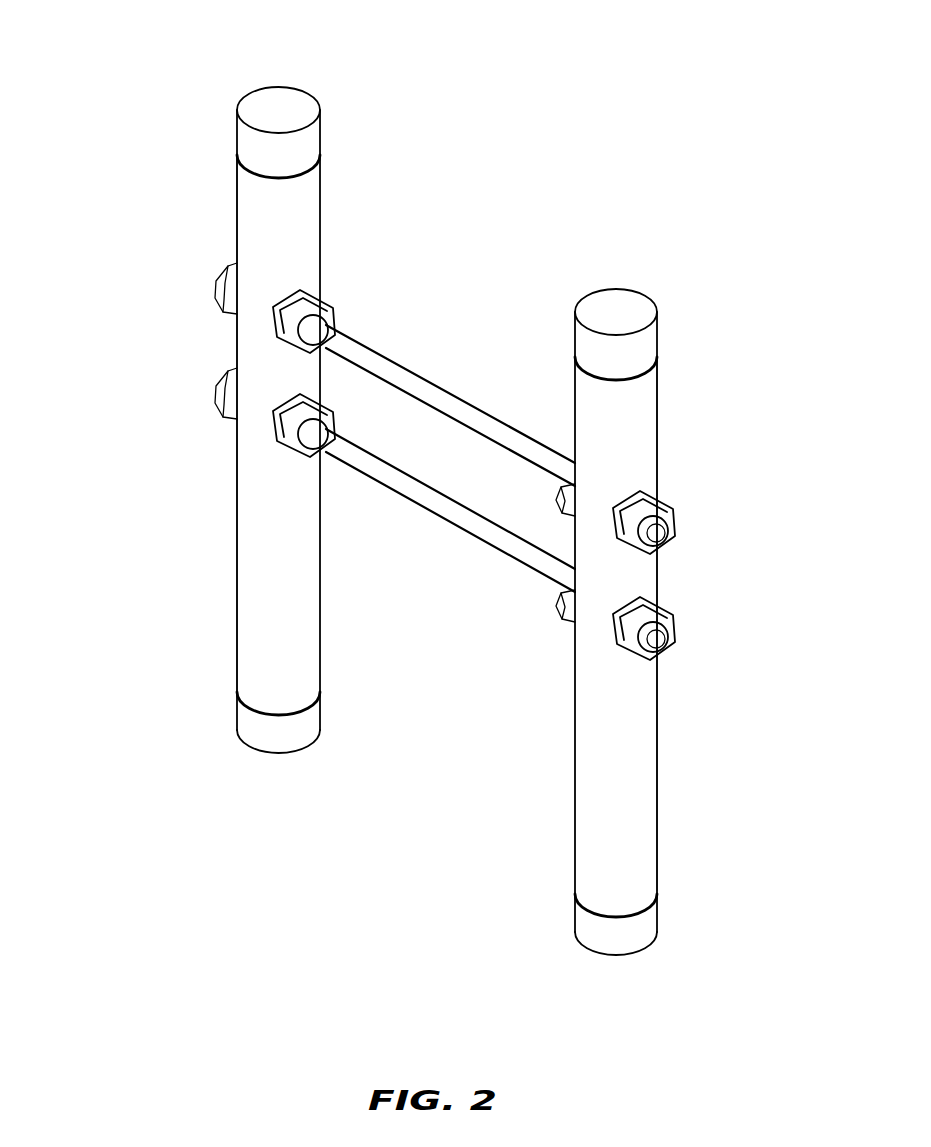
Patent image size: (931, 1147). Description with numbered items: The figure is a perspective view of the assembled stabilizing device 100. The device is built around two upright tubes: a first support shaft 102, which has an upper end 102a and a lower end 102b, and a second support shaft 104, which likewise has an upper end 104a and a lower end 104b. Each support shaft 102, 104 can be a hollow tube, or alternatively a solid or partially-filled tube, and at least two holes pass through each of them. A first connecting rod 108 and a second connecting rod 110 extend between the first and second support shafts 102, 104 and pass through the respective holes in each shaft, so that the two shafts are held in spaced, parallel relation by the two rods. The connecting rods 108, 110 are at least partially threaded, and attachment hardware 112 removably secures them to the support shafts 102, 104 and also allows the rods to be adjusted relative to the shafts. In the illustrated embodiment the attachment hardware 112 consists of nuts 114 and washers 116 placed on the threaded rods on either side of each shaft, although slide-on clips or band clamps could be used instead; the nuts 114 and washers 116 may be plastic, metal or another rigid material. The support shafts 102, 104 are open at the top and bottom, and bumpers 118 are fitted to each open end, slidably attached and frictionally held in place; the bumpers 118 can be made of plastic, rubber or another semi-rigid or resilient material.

The stabilizing device 100 is at (575, 102).
The first support shaft 102 is at (237, 532).
The upper end of first support shaft 102a is at (345, 178).
The lower end of first support shaft 102b is at (202, 655).
The second support shaft 104 is at (577, 752).
The upper end of second support shaft 104a is at (698, 374).
The lower end of second support shaft 104b is at (552, 855).
The first connecting rod 108 is at (471, 404).
The second connecting rod 110 is at (433, 486).
The attachment hardware 112 is at (182, 232).
The nuts 114 is at (215, 282).
The washers 116 is at (300, 291).
The bumpers 118 is at (320, 128).